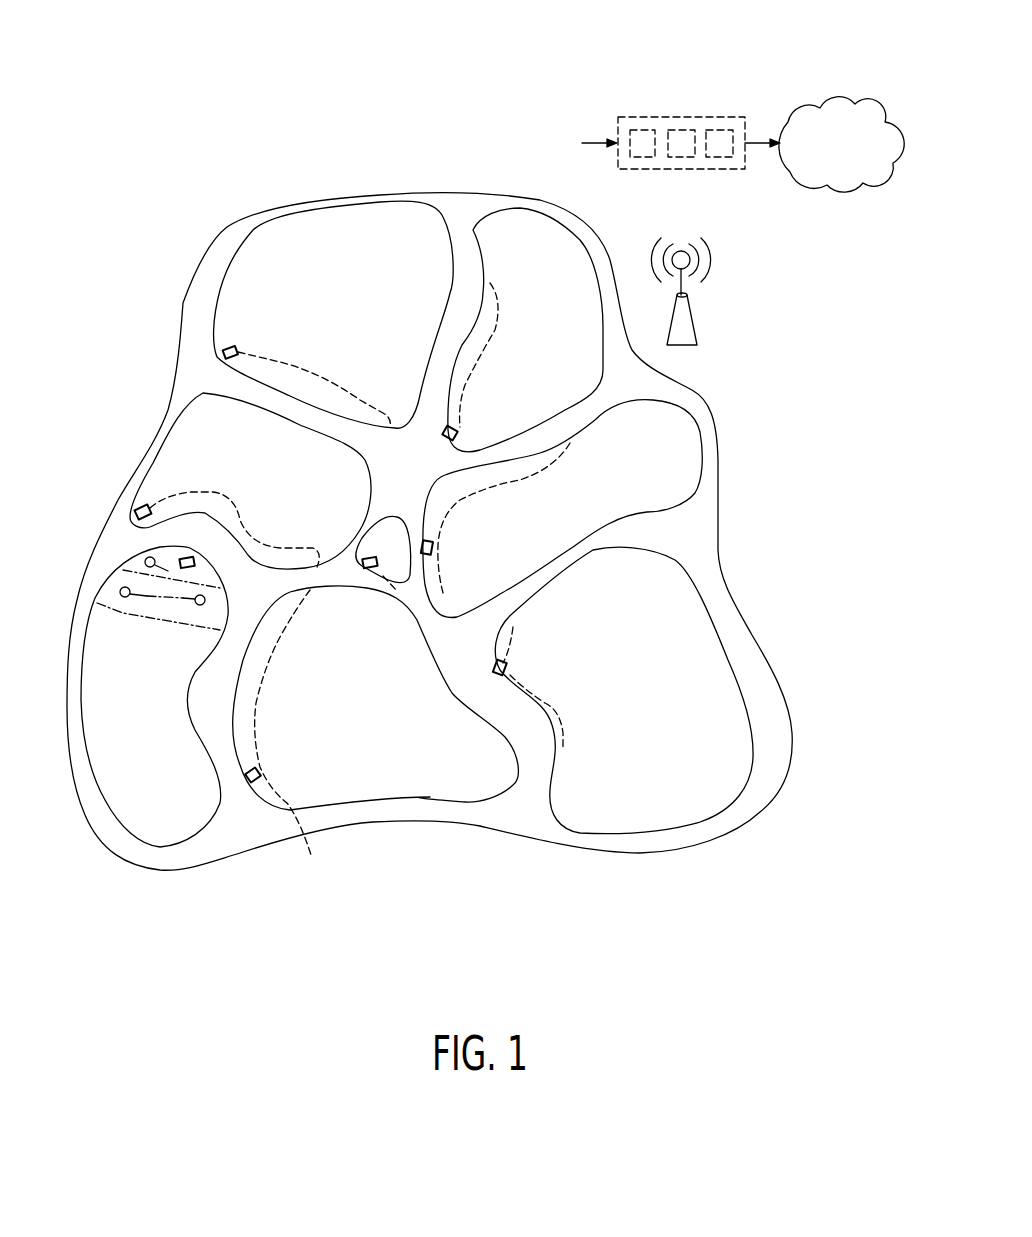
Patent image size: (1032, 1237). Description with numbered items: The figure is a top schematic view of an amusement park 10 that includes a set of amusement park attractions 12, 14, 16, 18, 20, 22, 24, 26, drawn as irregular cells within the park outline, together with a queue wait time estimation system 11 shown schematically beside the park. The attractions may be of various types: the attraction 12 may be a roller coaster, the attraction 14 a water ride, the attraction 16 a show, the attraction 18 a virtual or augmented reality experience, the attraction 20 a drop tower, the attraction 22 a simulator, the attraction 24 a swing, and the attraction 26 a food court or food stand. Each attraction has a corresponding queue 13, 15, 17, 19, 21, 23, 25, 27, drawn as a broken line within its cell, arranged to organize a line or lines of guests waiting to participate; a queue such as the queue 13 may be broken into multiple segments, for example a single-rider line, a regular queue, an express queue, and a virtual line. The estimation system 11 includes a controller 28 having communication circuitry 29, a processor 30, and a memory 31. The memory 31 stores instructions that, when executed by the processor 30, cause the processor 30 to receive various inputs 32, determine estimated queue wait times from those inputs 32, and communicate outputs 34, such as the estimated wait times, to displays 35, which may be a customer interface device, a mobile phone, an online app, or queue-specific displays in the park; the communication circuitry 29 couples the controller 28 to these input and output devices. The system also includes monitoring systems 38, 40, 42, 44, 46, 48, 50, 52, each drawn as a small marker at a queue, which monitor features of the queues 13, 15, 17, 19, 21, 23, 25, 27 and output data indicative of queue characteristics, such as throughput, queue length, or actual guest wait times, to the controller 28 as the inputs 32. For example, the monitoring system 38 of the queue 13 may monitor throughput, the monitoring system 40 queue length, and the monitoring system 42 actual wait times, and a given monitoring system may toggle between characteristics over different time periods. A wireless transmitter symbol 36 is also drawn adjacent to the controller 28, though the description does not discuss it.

The amusement park 10 is at (133, 241).
The queue wait time estimation system 11 is at (645, 35).
The amusement park attraction 12 is at (307, 230).
The queue 13 is at (300, 375).
The amusement park attraction 14 is at (493, 217).
The queue 15 is at (485, 355).
The amusement park attraction 16 is at (185, 420).
The queue 17 is at (218, 493).
The amusement park attraction 18 is at (680, 420).
The queue 19 is at (520, 480).
The amusement park attraction 20 is at (103, 765).
The queue 21 is at (123, 613).
The amusement park attraction 22 is at (373, 787).
The queue 23 is at (291, 742).
The amusement park attraction 24 is at (620, 820).
The queue 25 is at (557, 710).
The amusement park attraction 26 is at (390, 515).
The queue 27 is at (406, 595).
The controller 28 is at (672, 117).
The communication circuitry 29 is at (632, 168).
The processor 30 is at (672, 168).
The memory 31 is at (712, 168).
The inputs 32 is at (600, 142).
The outputs 34 is at (755, 140).
The displays 35 is at (840, 95).
The wireless transmitter 36 is at (697, 320).
The monitoring system 38 is at (232, 348).
The monitoring system 40 is at (440, 432).
The monitoring system 42 is at (153, 505).
The monitoring system 44 is at (432, 548).
The monitoring system 46 is at (197, 557).
The monitoring system 48 is at (263, 772).
The monitoring system 50 is at (490, 670).
The monitoring system 52 is at (380, 563).